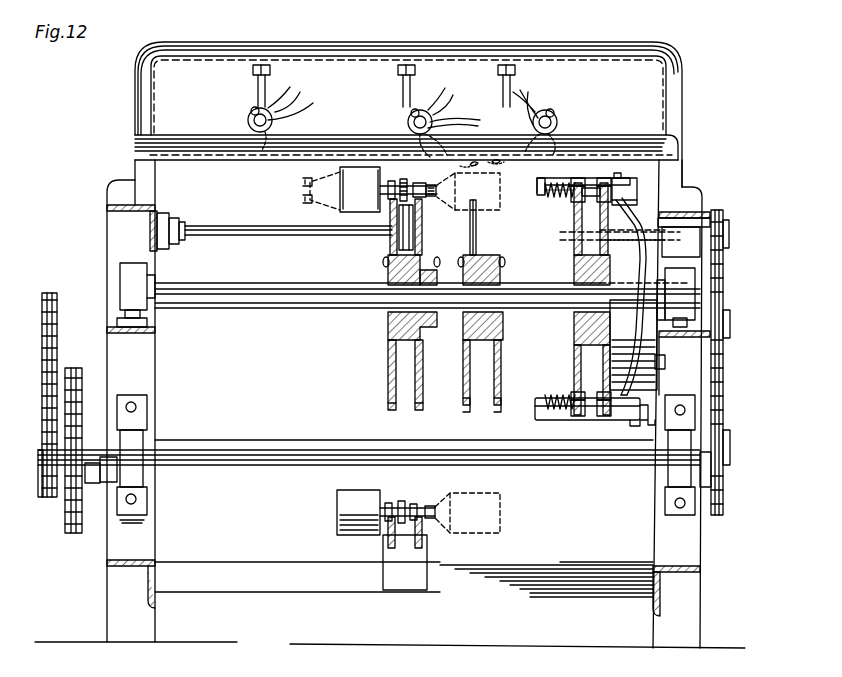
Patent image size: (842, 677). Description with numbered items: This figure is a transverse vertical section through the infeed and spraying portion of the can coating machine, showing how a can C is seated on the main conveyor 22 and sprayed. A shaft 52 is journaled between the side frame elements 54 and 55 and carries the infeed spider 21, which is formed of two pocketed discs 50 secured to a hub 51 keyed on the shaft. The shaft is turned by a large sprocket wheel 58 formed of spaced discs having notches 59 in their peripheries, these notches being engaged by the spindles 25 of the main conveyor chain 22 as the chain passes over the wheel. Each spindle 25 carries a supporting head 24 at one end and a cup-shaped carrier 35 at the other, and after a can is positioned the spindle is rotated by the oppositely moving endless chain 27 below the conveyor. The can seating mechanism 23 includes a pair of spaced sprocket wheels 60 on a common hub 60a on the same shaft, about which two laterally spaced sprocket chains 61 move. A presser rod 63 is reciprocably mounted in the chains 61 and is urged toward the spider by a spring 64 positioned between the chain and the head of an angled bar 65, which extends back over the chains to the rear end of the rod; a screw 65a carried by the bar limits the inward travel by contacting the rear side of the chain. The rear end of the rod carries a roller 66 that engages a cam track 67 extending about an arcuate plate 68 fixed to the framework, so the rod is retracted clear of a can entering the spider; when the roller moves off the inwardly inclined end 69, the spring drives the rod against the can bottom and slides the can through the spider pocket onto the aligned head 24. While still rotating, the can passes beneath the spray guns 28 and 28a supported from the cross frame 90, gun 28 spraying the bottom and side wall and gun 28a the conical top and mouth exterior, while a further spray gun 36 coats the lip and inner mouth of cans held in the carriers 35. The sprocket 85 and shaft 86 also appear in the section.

The infeed spider 21 is at (494, 362).
The main conveyor 22 is at (388, 191).
The can seating mechanism 23 is at (576, 214).
The supporting head 24 is at (468, 191).
The spindle 25 is at (413, 182).
The endless chain 27 is at (422, 223).
The spray gun 28 is at (546, 108).
The spray gun 28a is at (425, 105).
The carrier 35 is at (322, 173).
The spray gun 36 is at (252, 118).
The disc 50 is at (465, 398).
The hub 51 is at (498, 338).
The shaft 52 is at (299, 306).
The side frame element 54 is at (157, 348).
The side frame element 55 is at (672, 382).
The sprocket wheel 58 is at (388, 258).
The notch 59 is at (388, 408).
The sprocket wheel 60 is at (578, 250).
The common hub 60a is at (588, 336).
The sprocket chain 61 is at (574, 421).
The presser rod 63 is at (513, 197).
The spring 64 is at (550, 191).
The angled bar 65 is at (582, 177).
The screw 65a is at (598, 421).
The roller 66 is at (618, 200).
The cam track 67 is at (641, 252).
The arcuate plate 68 is at (642, 352).
The inclined end 69 is at (620, 177).
The sprocket 85 is at (724, 272).
The upper shaft 86 is at (281, 234).
The cross frame 90 is at (325, 135).
The can C is at (476, 166).